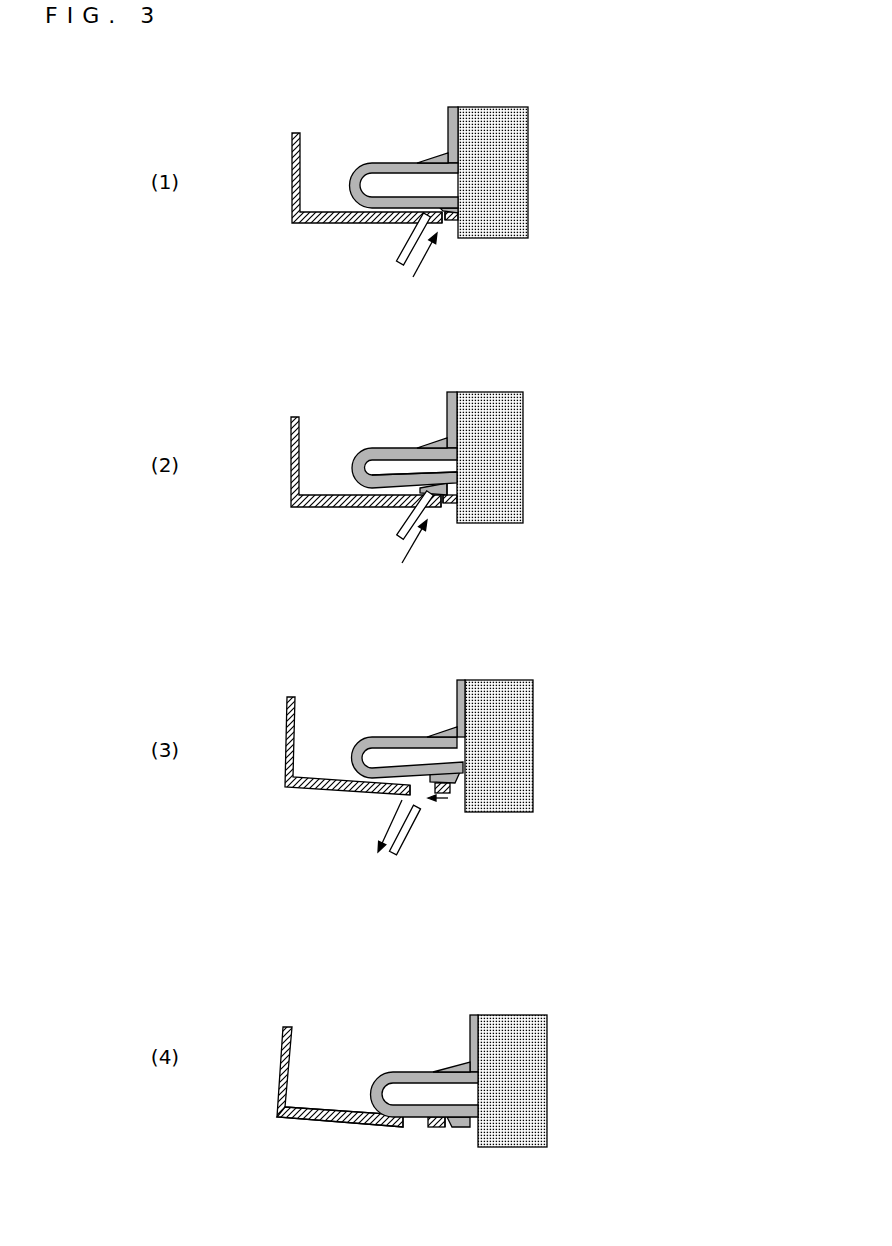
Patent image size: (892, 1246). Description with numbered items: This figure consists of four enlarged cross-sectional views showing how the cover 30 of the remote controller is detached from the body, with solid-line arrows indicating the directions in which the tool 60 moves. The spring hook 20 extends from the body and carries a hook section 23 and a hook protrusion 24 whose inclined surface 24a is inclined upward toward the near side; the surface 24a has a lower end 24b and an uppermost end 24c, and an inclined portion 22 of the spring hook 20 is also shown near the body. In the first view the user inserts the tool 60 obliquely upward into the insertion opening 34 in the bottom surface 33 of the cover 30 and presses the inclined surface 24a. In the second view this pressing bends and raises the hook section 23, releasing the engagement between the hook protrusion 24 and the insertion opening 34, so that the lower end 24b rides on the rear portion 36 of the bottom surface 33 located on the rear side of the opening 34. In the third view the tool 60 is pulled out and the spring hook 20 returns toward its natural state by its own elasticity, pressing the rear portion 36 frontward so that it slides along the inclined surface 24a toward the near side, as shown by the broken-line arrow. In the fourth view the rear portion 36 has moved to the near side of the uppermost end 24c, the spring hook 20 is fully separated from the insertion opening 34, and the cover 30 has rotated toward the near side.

The spring hook 20 is at (376, 162).
The inclined guide portion of terminal 22 is at (437, 440).
The hook section 23 is at (402, 474).
The hook protrusion 24 is at (388, 510).
The inclined surface 24a is at (437, 216).
The lower end 24b is at (452, 488).
The uppermost end 24c is at (447, 1128).
The cover 30 is at (281, 1090).
The bottom surface 33 is at (318, 224).
The insertion opening 34 is at (433, 218).
The rear portion 36 is at (449, 505).
The tool 60 is at (398, 243).